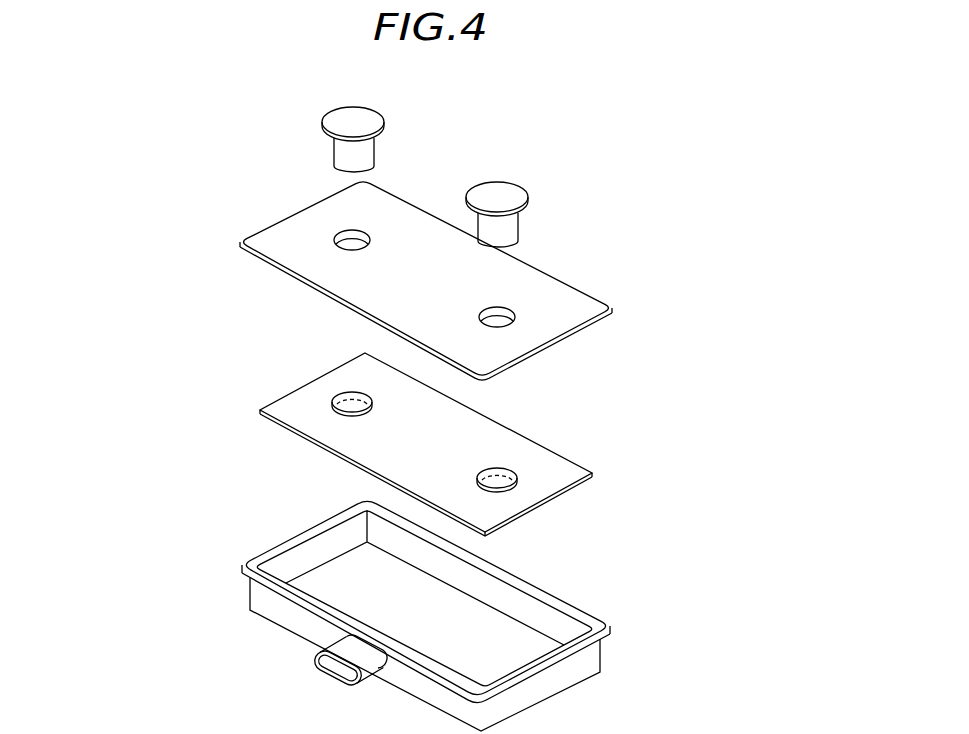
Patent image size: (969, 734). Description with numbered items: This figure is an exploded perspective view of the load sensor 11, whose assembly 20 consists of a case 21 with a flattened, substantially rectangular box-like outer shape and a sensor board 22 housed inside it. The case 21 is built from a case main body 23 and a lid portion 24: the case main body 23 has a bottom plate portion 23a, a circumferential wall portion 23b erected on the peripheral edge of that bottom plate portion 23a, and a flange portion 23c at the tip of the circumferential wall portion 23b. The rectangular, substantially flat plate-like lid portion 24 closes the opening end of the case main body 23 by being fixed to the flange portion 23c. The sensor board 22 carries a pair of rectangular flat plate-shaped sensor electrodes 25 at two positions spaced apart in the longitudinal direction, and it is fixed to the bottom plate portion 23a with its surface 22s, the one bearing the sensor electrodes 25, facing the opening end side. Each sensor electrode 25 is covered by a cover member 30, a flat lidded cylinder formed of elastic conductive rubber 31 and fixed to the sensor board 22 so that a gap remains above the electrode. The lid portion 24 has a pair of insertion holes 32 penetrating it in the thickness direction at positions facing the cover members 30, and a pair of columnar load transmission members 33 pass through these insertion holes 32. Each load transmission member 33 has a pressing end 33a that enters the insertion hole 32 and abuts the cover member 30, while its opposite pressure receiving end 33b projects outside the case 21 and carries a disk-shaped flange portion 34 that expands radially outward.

The load sensor 11 is at (340, 397).
The module assembly 20 is at (141, 142).
The case 21 is at (240, 238).
The sensor board 22 is at (401, 444).
The surface 22s is at (308, 423).
The case main body 23 is at (396, 616).
The bottom plate portion 23a is at (414, 610).
The circumferential wall portion 23b is at (562, 687).
The flange portion 23c is at (558, 602).
The lid portion 24 is at (380, 281).
The sensor electrode 25 is at (373, 394).
The cover member 30 is at (419, 412).
The conductive rubber 31 is at (419, 412).
The insertion hole 32 is at (370, 242).
The load transmission member 33 is at (453, 160).
The pressing end 33a is at (374, 165).
The pressure receiving end 33b is at (453, 160).
The flange portion 34 is at (376, 137).